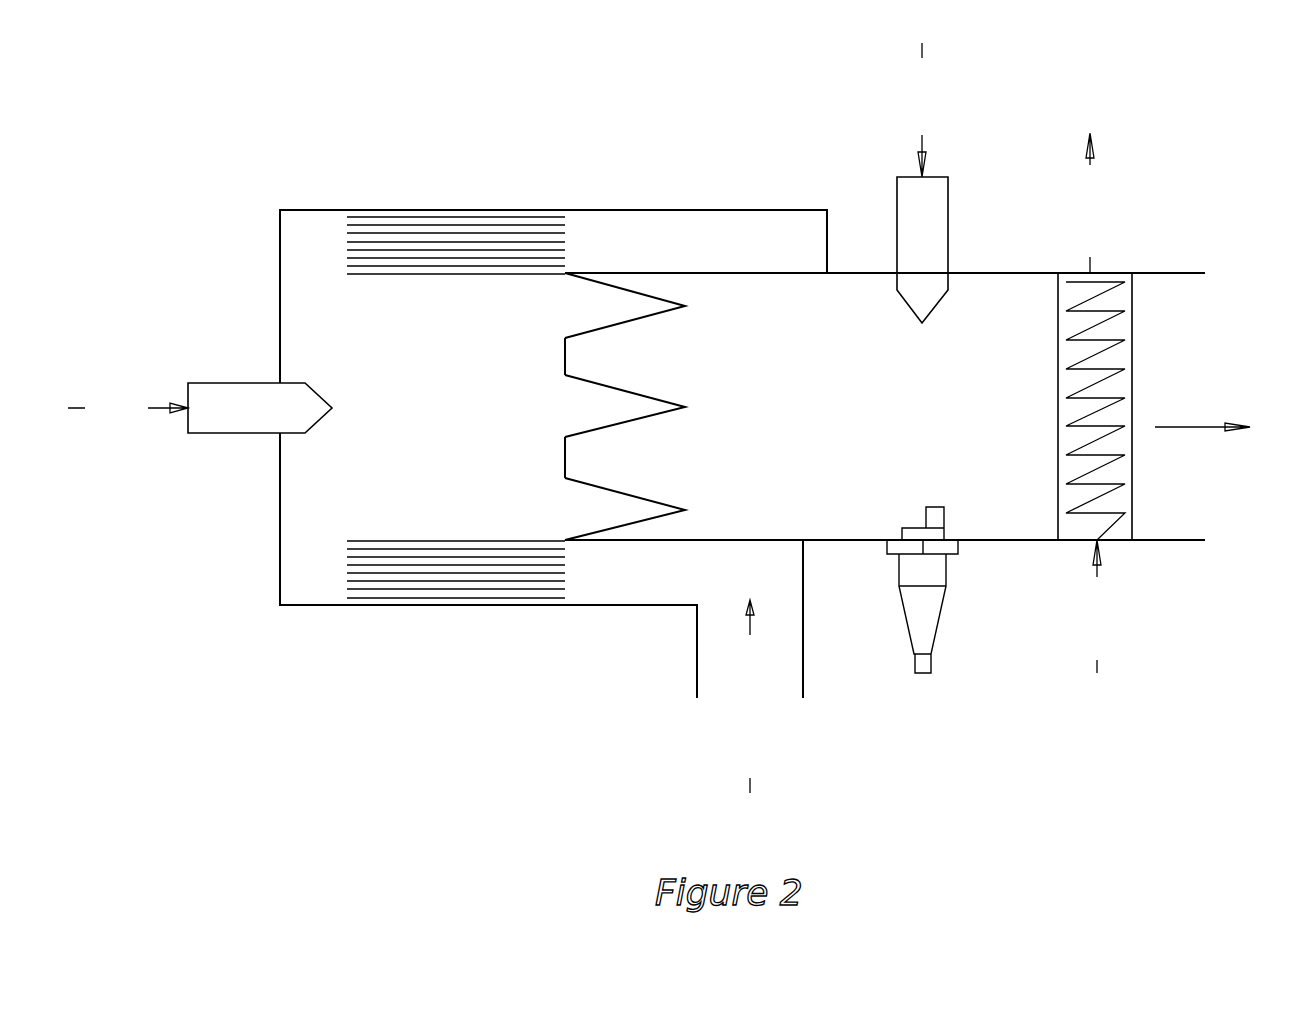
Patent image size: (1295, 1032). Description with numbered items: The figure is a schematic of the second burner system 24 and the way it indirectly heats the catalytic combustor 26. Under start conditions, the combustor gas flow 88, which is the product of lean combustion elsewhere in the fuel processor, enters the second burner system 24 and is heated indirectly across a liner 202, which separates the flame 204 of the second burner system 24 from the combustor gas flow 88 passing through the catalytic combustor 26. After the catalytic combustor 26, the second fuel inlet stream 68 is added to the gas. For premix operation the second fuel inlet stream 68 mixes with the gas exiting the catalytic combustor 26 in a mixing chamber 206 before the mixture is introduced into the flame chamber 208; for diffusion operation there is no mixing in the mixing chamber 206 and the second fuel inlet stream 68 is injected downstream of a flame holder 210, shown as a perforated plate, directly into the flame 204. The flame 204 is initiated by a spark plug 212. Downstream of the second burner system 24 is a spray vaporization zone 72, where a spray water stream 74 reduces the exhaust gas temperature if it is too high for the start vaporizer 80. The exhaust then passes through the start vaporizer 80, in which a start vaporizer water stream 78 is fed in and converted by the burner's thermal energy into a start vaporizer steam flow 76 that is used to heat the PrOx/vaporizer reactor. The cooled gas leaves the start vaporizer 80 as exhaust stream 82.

The second burner system 24 is at (797, 510).
The catalytic combustor 26 is at (516, 226).
The second fuel inlet stream 68 is at (240, 383).
The spray vaporization zone 72 is at (935, 425).
The spray water stream 74 is at (923, 143).
The start vaporizer steam flow 76 is at (1090, 163).
The start vaporizer water stream 78 is at (1097, 573).
The start vaporizer 80 is at (1125, 354).
The exhaust stream 82 is at (1195, 427).
The combustor gas flow 88 is at (748, 785).
The liner 202 is at (677, 545).
The flame 204 is at (633, 424).
The mixing chamber 206 is at (448, 432).
The flame chamber 208 is at (778, 398).
The flame holder 210 is at (565, 355).
The spark plug 212 is at (937, 620).